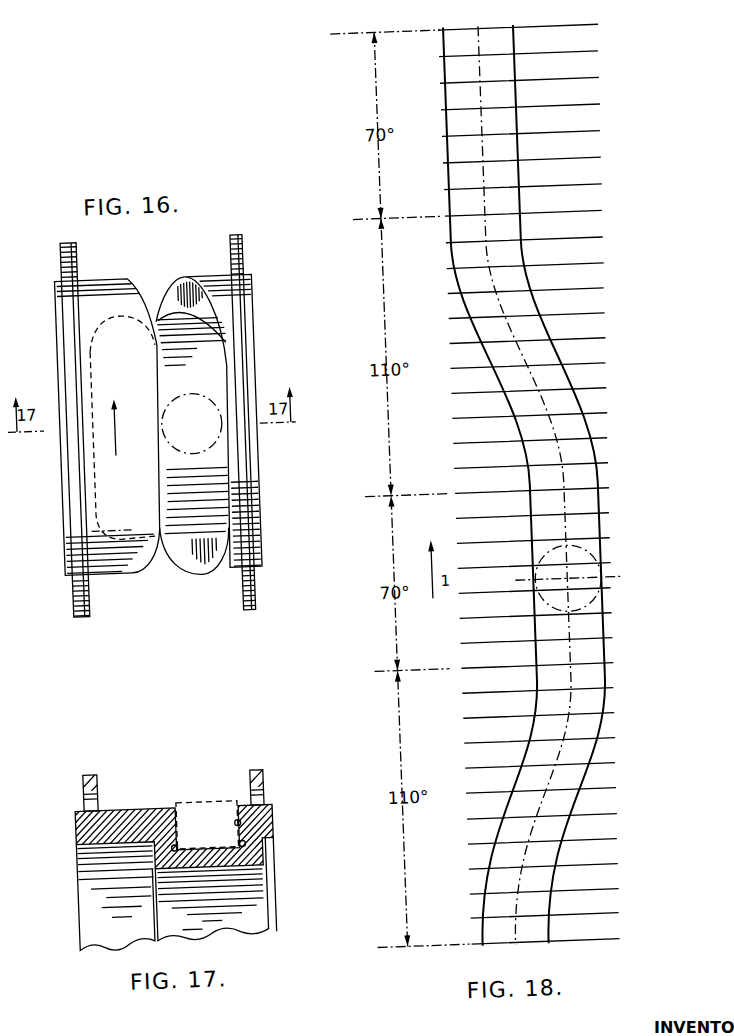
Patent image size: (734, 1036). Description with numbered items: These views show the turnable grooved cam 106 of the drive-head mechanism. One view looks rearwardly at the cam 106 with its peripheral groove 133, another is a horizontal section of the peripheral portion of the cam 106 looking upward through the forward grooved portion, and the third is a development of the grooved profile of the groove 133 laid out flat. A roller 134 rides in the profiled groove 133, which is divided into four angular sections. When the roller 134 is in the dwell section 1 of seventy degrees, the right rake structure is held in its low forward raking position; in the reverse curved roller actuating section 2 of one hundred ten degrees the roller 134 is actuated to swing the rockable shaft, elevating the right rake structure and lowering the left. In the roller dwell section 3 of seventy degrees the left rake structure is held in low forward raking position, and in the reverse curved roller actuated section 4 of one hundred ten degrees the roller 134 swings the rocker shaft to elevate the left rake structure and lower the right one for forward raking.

In FIG. 18, the dwell section 1 is at (577, 574).
In FIG. 18, the reverse curved roller actuating section 2 is at (535, 857).
In FIG. 18, the roller dwell section 3 is at (513, 124).
In FIG. 18, the reverse curved roller actuated section 4 is at (545, 356).
In FIG. 16, the cam 106 is at (266, 277).
In FIG. 17, the cam 106 is at (287, 817).
In FIG. 16, the peripheral groove 133 is at (183, 291).
In FIG. 17, the peripheral groove 133 is at (243, 824).
In FIG. 16, the roller 134 is at (194, 394).
In FIG. 17, the roller 134 is at (217, 801).
In FIG. 18, the roller 134 is at (586, 602).